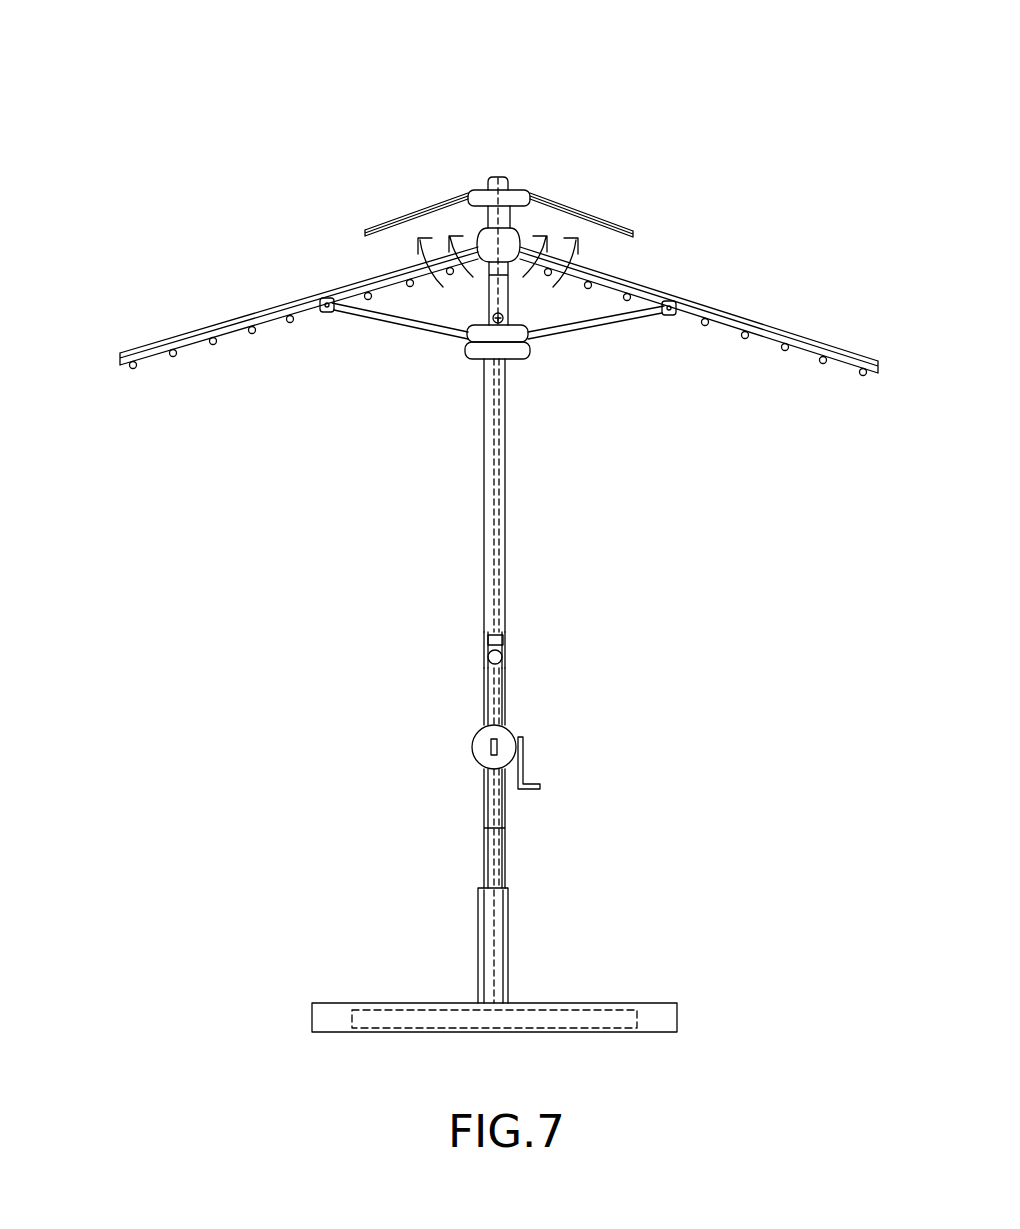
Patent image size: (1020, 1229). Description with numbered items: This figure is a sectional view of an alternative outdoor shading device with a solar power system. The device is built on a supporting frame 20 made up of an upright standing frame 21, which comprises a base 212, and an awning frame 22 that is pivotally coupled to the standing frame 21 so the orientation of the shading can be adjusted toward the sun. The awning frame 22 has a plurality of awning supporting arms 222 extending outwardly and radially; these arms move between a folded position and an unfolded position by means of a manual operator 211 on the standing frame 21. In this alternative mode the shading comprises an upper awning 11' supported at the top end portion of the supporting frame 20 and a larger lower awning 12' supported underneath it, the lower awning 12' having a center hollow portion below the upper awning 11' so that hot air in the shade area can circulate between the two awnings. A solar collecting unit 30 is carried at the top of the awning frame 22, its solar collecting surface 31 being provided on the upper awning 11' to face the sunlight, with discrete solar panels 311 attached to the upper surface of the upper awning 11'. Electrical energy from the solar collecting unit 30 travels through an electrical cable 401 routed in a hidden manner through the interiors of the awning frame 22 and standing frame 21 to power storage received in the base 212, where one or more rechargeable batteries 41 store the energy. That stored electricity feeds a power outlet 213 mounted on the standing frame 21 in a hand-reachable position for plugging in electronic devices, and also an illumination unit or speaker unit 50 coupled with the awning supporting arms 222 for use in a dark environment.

The solar collecting unit 30 is at (517, 107).
The solar collecting surface 31 is at (387, 214).
The discrete solar panels 311 is at (560, 200).
The upper awning 11' is at (650, 212).
The lower awning 12' is at (706, 306).
The illumination unit or speaker unit 50 is at (132, 376).
The awning supporting arms 222 is at (238, 327).
The awning frame 22 is at (787, 443).
The electrical cable 401 is at (500, 462).
The power outlet 213 is at (504, 652).
The manual operator 211 is at (508, 748).
The standing frame 21 is at (455, 850).
The supporting frame 20 is at (780, 703).
The base 212 is at (665, 1012).
The rechargeable batteries 41 is at (578, 1018).